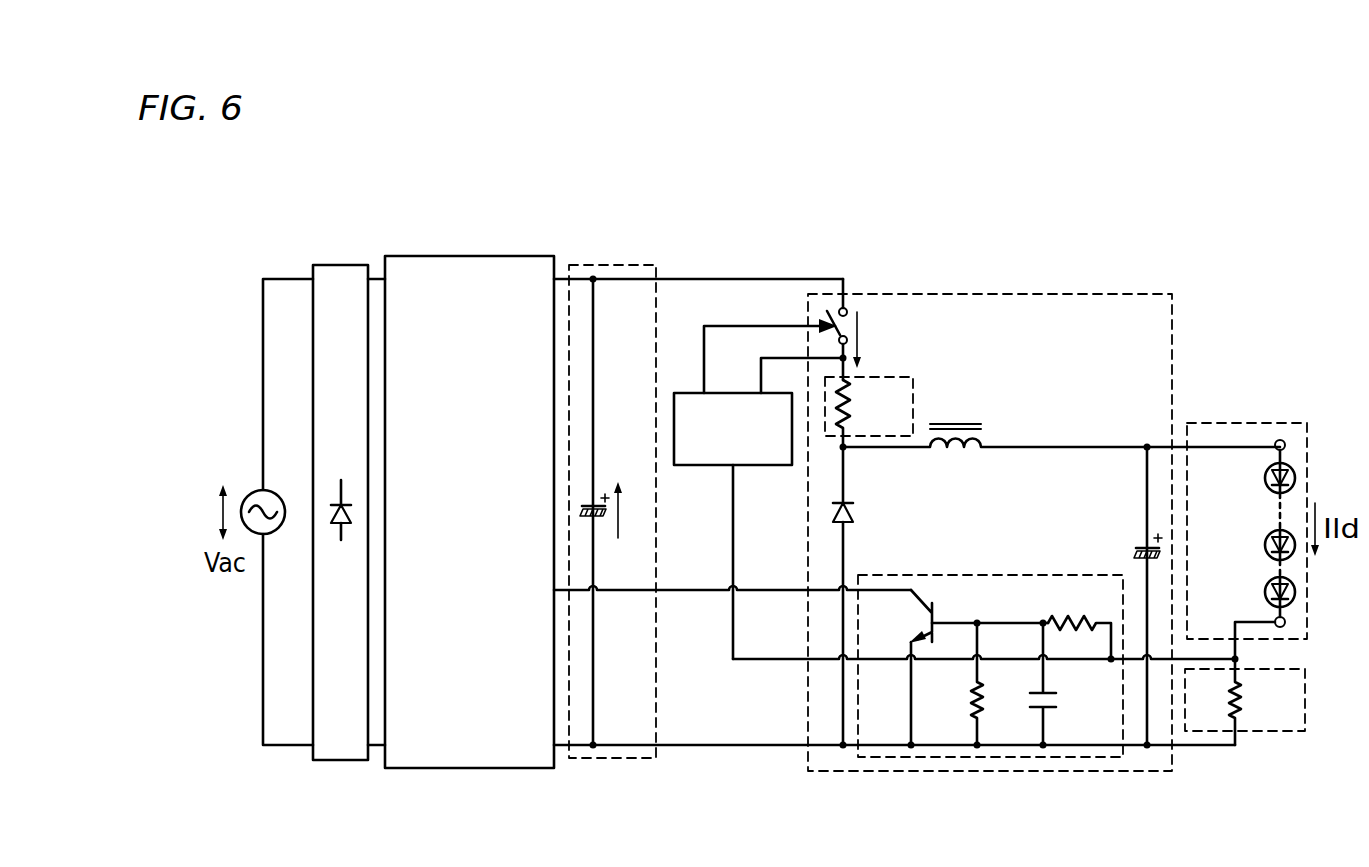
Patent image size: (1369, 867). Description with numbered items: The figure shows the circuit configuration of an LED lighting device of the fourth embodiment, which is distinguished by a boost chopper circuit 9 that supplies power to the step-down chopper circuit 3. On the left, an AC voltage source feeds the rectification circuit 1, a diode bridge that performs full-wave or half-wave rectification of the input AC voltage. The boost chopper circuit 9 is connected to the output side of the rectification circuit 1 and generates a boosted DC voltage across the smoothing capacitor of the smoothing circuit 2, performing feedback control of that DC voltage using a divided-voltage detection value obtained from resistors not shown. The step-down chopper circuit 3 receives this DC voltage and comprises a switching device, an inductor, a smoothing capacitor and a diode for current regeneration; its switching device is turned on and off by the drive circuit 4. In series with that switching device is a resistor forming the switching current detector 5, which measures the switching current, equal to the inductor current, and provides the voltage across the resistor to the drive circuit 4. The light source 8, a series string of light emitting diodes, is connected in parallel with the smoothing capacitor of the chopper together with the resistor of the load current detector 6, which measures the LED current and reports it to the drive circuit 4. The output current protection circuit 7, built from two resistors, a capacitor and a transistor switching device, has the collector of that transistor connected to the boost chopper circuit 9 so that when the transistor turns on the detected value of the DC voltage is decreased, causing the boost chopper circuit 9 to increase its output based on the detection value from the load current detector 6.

The rectification circuit 1 is at (340, 265).
The smoothing circuit 2 is at (612, 490).
The step-down chopper circuit 3 is at (1009, 291).
The drive circuit 4 is at (763, 458).
The switching current detector 5 is at (884, 410).
The load current detector 6 is at (1258, 701).
The output current protection circuit 7 is at (987, 575).
The light source 8 is at (1247, 421).
The boost chopper circuit 9 is at (467, 256).